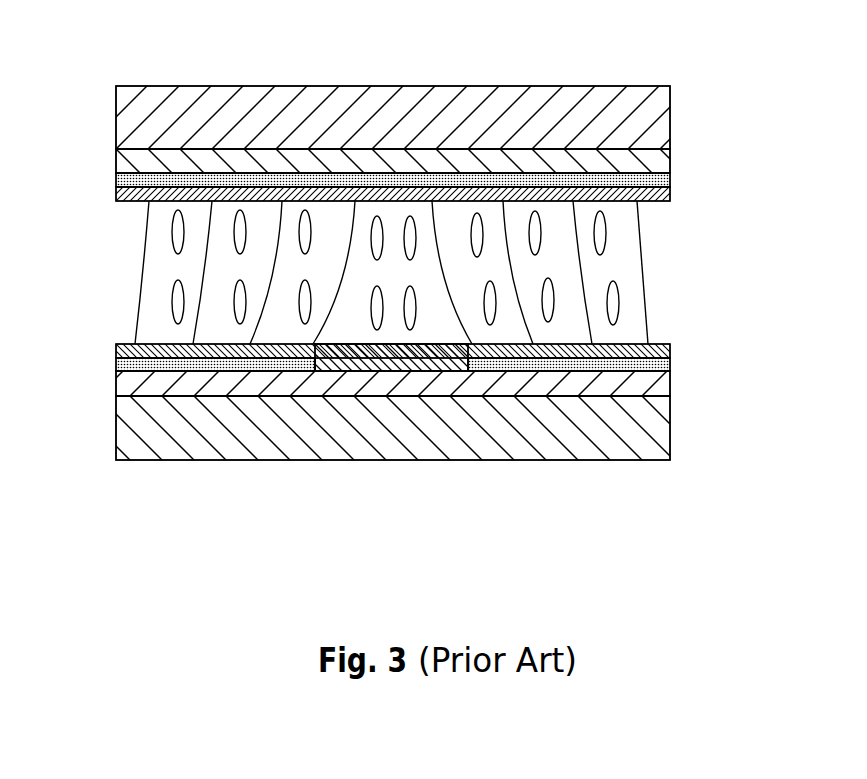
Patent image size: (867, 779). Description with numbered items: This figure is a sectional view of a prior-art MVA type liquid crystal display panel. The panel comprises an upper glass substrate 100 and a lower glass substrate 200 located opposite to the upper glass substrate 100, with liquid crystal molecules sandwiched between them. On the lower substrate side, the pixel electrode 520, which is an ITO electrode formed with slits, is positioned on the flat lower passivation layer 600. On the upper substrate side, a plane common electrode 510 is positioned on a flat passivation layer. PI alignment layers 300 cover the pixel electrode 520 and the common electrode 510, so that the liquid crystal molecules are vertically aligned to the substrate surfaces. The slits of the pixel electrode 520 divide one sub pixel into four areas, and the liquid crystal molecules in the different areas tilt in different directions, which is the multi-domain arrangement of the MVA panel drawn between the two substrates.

The upper glass substrate 100 is at (612, 107).
The lower glass substrate 200 is at (610, 445).
The PI alignment layers 300 is at (128, 192).
The common electrode 510 is at (670, 180).
The pixel electrode 520 is at (670, 365).
The lower passivation layer 600 is at (130, 168).